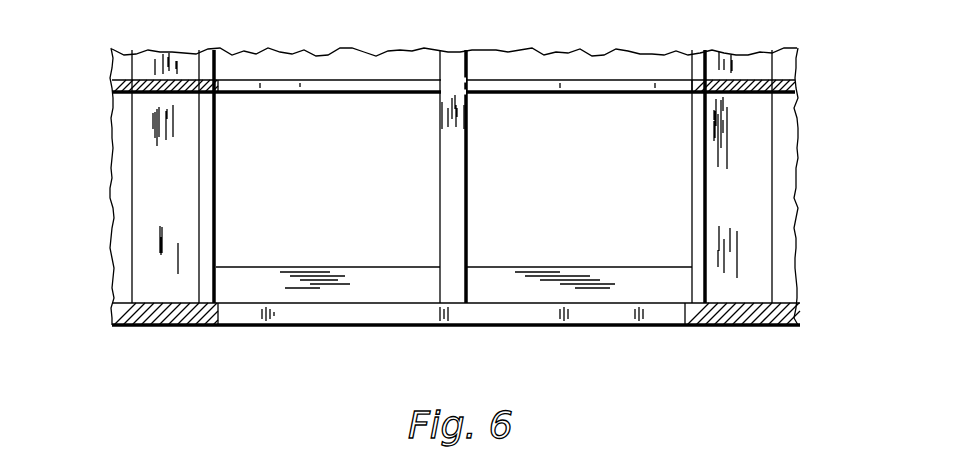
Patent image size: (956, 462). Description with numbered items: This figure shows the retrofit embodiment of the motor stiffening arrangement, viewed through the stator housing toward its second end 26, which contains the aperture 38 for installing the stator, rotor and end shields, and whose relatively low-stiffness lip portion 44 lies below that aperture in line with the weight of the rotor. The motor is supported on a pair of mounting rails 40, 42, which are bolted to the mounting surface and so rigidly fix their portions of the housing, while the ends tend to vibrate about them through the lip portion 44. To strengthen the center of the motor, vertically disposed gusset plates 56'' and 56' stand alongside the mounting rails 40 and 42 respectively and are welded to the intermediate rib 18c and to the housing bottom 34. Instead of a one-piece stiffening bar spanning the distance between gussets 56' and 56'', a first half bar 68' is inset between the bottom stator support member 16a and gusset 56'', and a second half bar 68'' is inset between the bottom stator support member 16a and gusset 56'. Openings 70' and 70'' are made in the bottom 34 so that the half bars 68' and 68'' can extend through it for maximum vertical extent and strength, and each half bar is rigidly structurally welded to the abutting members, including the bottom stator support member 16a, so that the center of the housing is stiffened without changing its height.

The mounting rail 40 is at (162, 222).
The mounting rail 42 is at (740, 216).
The intermediate rib 18c is at (382, 94).
The gusset 56'' is at (245, 176).
The gusset 56' is at (667, 176).
The bottom stator support member 16a is at (470, 188).
The bottom 34 is at (386, 178).
The opening 70' is at (328, 242).
The opening 70'' is at (579, 242).
The first half bar 68' is at (324, 254).
The second half bar 68'' is at (576, 252).
The lip portion 44 is at (437, 324).
The aperture 38 is at (493, 323).
The second end 26 is at (618, 329).